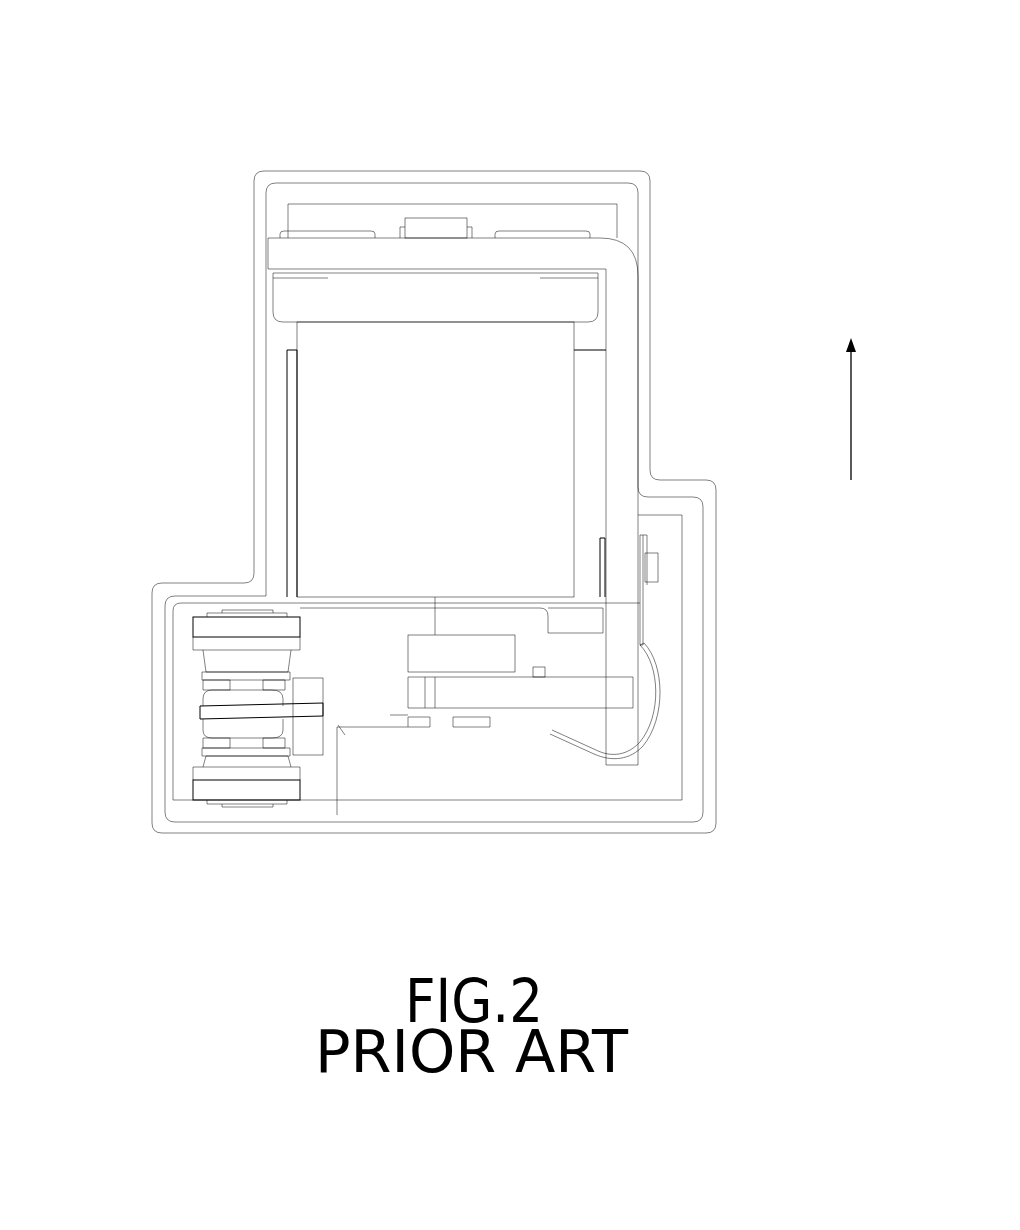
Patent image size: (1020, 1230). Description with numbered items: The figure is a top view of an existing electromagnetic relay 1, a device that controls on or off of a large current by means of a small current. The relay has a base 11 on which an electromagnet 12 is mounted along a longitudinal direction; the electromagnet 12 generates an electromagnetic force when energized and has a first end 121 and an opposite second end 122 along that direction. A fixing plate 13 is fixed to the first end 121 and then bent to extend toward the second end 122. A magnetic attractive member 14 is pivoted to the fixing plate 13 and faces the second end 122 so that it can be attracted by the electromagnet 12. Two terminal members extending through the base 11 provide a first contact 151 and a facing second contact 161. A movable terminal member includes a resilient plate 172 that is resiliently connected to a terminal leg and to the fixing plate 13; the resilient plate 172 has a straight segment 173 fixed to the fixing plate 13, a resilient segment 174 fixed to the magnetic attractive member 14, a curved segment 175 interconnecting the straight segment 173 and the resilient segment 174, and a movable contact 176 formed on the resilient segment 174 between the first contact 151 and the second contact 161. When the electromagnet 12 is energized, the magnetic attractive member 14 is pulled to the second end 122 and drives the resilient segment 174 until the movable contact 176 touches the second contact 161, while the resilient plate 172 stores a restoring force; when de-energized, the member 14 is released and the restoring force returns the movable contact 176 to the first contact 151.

The electromagnetic relay 1 is at (178, 401).
The base 11 is at (254, 325).
The electromagnet 12 is at (574, 426).
The first end 121 is at (435, 228).
The second end 122 is at (497, 658).
The fixing plate 13 is at (626, 262).
The magnetic attractive member 14 is at (580, 702).
The first contact 151 is at (230, 762).
The second contact 161 is at (218, 657).
The resilient plate 172 is at (648, 713).
The curved segment 175 is at (642, 644).
The straight segment 173 is at (643, 623).
The resilient segment 174 is at (443, 717).
The movable contact 176 is at (215, 720).